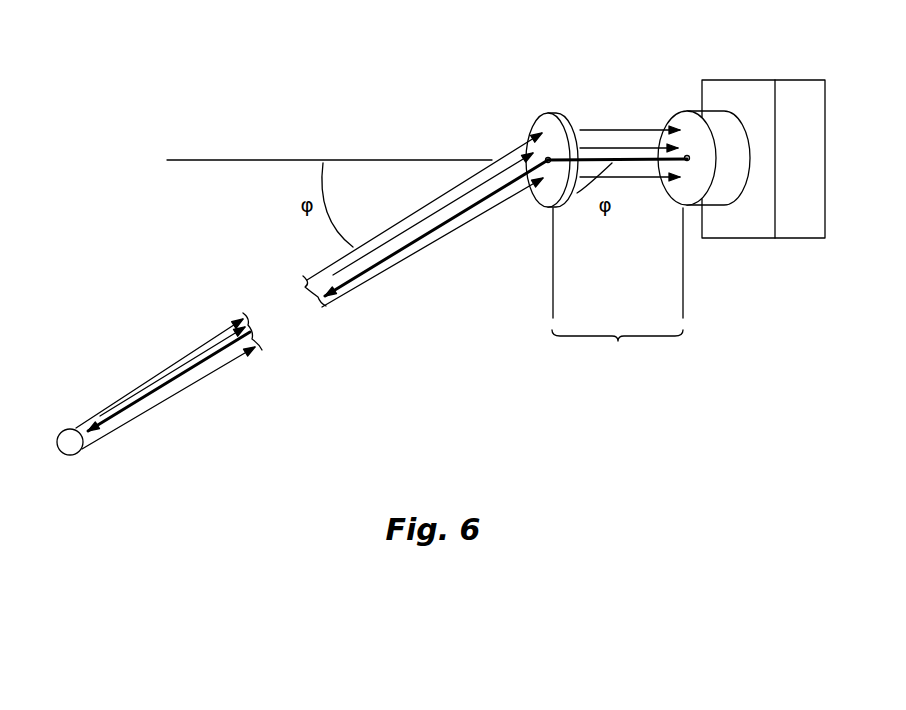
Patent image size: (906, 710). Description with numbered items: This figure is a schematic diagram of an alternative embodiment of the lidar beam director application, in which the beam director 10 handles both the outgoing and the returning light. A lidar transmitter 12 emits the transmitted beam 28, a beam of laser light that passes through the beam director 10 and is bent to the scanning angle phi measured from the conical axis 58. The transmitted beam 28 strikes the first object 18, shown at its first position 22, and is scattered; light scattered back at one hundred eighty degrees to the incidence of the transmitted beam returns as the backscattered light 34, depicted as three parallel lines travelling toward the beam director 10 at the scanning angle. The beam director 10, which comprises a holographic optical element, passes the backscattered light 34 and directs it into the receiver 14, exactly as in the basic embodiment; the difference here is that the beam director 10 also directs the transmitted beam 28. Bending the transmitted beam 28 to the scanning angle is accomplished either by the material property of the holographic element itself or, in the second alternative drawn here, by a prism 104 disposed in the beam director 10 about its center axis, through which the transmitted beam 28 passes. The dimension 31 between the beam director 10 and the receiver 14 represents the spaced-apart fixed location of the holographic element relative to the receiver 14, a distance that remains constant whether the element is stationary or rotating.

The beam director 10 is at (542, 113).
The prism 104 is at (552, 155).
The lidar transmitter 12 is at (690, 152).
The receiver 14 is at (747, 95).
The backscattered light 34 is at (637, 148).
The transmitted beam 28 is at (360, 276).
The conical axis 58 is at (212, 158).
The dimension 31 is at (617, 290).
The first object 18 is at (77, 452).
The first position 22 is at (66, 482).